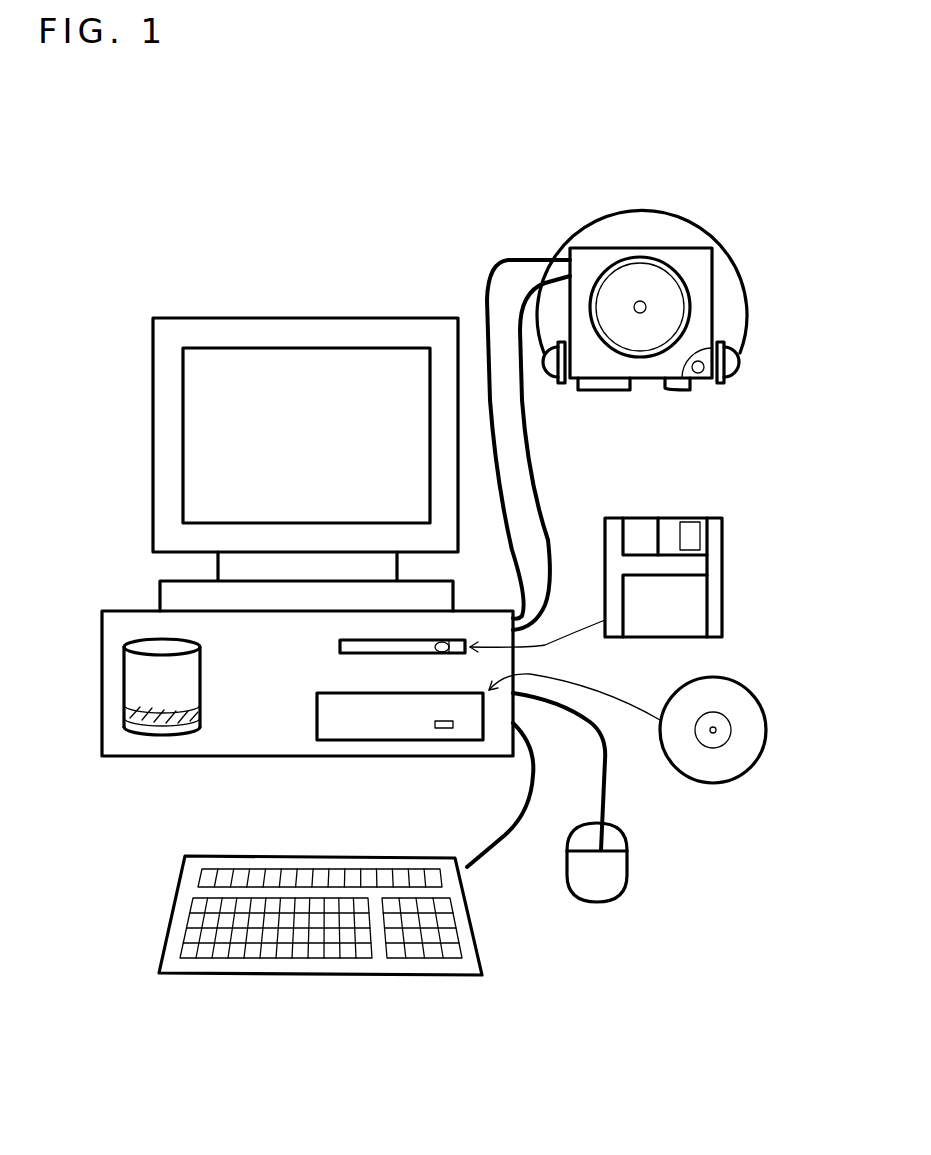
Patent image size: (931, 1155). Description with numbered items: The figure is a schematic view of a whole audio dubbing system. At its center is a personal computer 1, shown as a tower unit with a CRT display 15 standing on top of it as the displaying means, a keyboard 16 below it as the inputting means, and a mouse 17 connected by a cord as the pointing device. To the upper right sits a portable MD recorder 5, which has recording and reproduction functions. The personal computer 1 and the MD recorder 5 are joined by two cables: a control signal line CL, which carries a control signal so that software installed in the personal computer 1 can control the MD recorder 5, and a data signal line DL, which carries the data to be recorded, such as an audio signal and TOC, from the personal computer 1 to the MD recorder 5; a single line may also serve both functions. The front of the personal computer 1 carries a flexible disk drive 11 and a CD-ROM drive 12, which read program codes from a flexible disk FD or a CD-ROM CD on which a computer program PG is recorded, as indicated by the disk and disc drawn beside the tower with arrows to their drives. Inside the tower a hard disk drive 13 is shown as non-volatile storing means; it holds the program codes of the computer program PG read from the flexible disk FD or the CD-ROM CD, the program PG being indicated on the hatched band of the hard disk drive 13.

The personal computer 1 is at (127, 585).
The portable MD recorder 5 is at (712, 218).
The flexible disk drive 11 is at (340, 647).
The CD-ROM drive 12 is at (317, 716).
The hard disk drive 13 is at (160, 737).
The CRT display 15 is at (380, 317).
The keyboard 16 is at (170, 916).
The mouse 17 is at (627, 873).
The control signal line CL is at (500, 263).
The data signal line DL is at (532, 425).
The computer program PG is at (127, 710).
The flexible disk FD is at (722, 572).
The CD-ROM CD is at (733, 783).